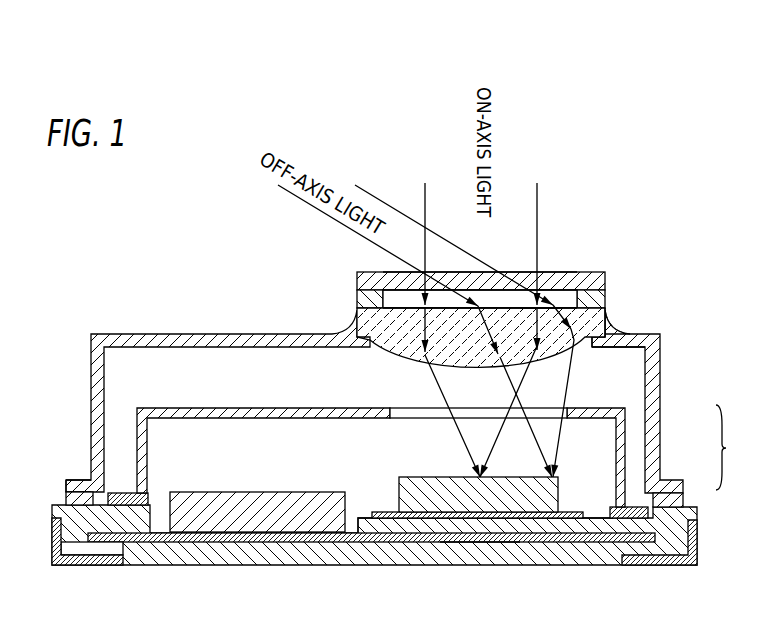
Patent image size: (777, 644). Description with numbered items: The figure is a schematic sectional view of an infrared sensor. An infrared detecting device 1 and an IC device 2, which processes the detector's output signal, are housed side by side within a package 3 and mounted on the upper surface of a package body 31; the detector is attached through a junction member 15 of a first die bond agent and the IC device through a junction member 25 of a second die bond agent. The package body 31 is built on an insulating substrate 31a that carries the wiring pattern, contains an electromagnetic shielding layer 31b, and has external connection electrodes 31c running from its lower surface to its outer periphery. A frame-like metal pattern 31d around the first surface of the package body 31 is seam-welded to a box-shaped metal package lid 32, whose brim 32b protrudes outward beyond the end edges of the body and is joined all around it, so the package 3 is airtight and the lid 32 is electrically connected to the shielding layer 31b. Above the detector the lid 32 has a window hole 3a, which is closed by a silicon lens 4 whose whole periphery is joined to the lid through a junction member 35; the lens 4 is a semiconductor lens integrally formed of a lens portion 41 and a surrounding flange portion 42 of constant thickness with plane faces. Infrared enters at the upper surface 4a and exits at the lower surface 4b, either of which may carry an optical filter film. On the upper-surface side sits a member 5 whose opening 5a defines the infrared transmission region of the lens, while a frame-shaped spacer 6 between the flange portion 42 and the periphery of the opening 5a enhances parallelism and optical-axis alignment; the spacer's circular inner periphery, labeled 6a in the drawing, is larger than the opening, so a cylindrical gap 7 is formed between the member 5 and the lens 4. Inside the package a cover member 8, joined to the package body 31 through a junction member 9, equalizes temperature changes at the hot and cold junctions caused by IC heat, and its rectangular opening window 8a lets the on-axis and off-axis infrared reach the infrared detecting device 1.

The infrared detecting device 1 is at (540, 502).
The IC device 2 is at (237, 520).
The package 3 is at (378, 465).
The window hole 3a is at (583, 347).
The lens 4 is at (516, 307).
The upper surface 4a is at (507, 318).
The lower surface 4b is at (417, 345).
The member 5 is at (495, 267).
The opening 5a is at (463, 283).
The spacer 6 is at (495, 267).
The aperture of light shielding member 6a is at (566, 302).
The gap 7 is at (486, 300).
The cover member 8 is at (385, 437).
The opening window 8a is at (418, 410).
The junction member 9 is at (623, 517).
The junction member 15 is at (493, 517).
The junction member 25 is at (278, 540).
The package body 31 is at (365, 541).
The substrate 31a is at (480, 540).
The electromagnetic shielding layer 31b is at (482, 528).
The external connection electrodes 31c is at (87, 565).
The metal pattern 31d is at (70, 496).
The package lid 32 is at (371, 401).
The brim 32b is at (78, 483).
The junction member 35 is at (615, 332).
The lens portion 41 is at (541, 300).
The flange portion 42 is at (595, 320).